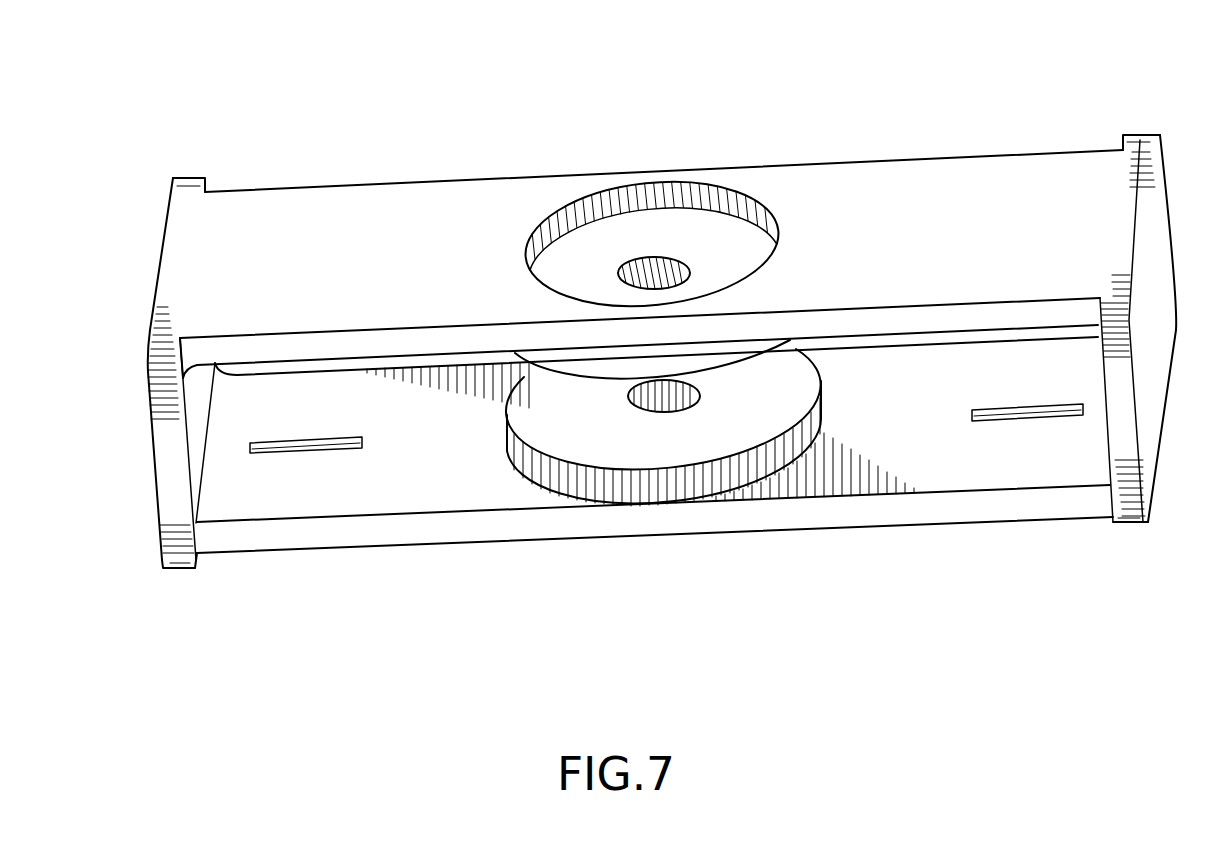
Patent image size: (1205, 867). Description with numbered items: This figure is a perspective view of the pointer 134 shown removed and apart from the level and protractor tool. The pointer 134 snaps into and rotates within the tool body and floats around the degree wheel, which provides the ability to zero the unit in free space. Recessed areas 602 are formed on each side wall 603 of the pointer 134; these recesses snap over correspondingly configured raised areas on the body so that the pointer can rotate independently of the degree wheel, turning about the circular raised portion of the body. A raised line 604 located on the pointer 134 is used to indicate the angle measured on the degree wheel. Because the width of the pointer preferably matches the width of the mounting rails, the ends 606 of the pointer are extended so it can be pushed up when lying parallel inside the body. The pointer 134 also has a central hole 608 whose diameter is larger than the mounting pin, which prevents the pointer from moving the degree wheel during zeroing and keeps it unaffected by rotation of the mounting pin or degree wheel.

The pointer 134 is at (920, 512).
The recessed area 602 is at (603, 203).
The side wall 603 is at (948, 238).
The raised line 604 is at (330, 453).
The ends 606 is at (190, 190).
The central hole 608 is at (640, 253).